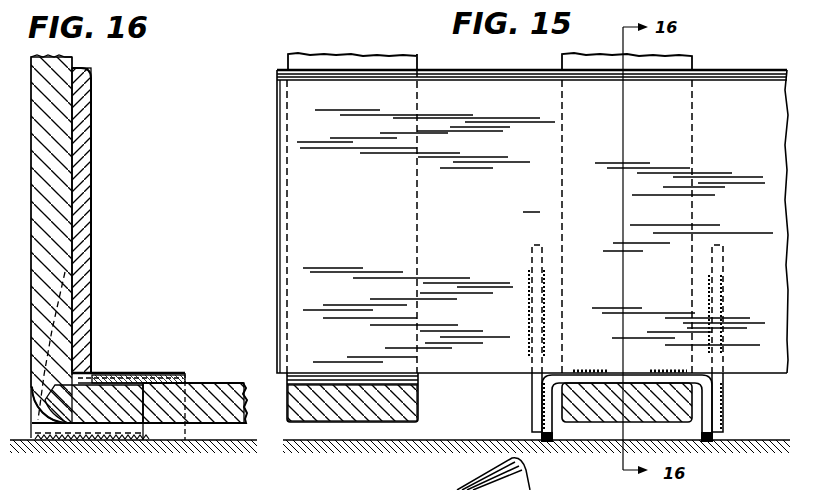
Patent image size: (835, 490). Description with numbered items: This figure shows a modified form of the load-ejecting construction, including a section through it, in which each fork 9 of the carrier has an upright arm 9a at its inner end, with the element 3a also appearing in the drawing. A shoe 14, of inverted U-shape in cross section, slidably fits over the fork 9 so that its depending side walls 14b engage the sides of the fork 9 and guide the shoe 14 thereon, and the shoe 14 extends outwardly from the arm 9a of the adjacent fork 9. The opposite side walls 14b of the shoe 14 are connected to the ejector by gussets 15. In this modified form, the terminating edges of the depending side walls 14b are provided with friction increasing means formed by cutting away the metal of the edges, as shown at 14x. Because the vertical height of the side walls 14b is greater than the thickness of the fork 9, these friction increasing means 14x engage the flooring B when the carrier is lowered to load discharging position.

In FIG. 16, the panel body 3a is at (85, 261).
In FIG. 15, the panel body 3a is at (297, 257).
In FIG. 16, the upright arm 9a is at (38, 222).
In FIG. 15, the upright arm 9a is at (288, 58).
In FIG. 16, the fork 9 is at (233, 387).
In FIG. 15, the fork 9 is at (396, 407).
In FIG. 16, the shoe 14 is at (156, 373).
In FIG. 15, the shoe 14 is at (634, 375).
In FIG. 15, the gusset 15 is at (530, 383).
In FIG. 15, the side wall 14b is at (532, 400).
In FIG. 16, the friction increasing means 14x is at (113, 440).
In FIG. 15, the friction increasing means 14x is at (548, 441).
In FIG. 16, the flooring B is at (248, 447).